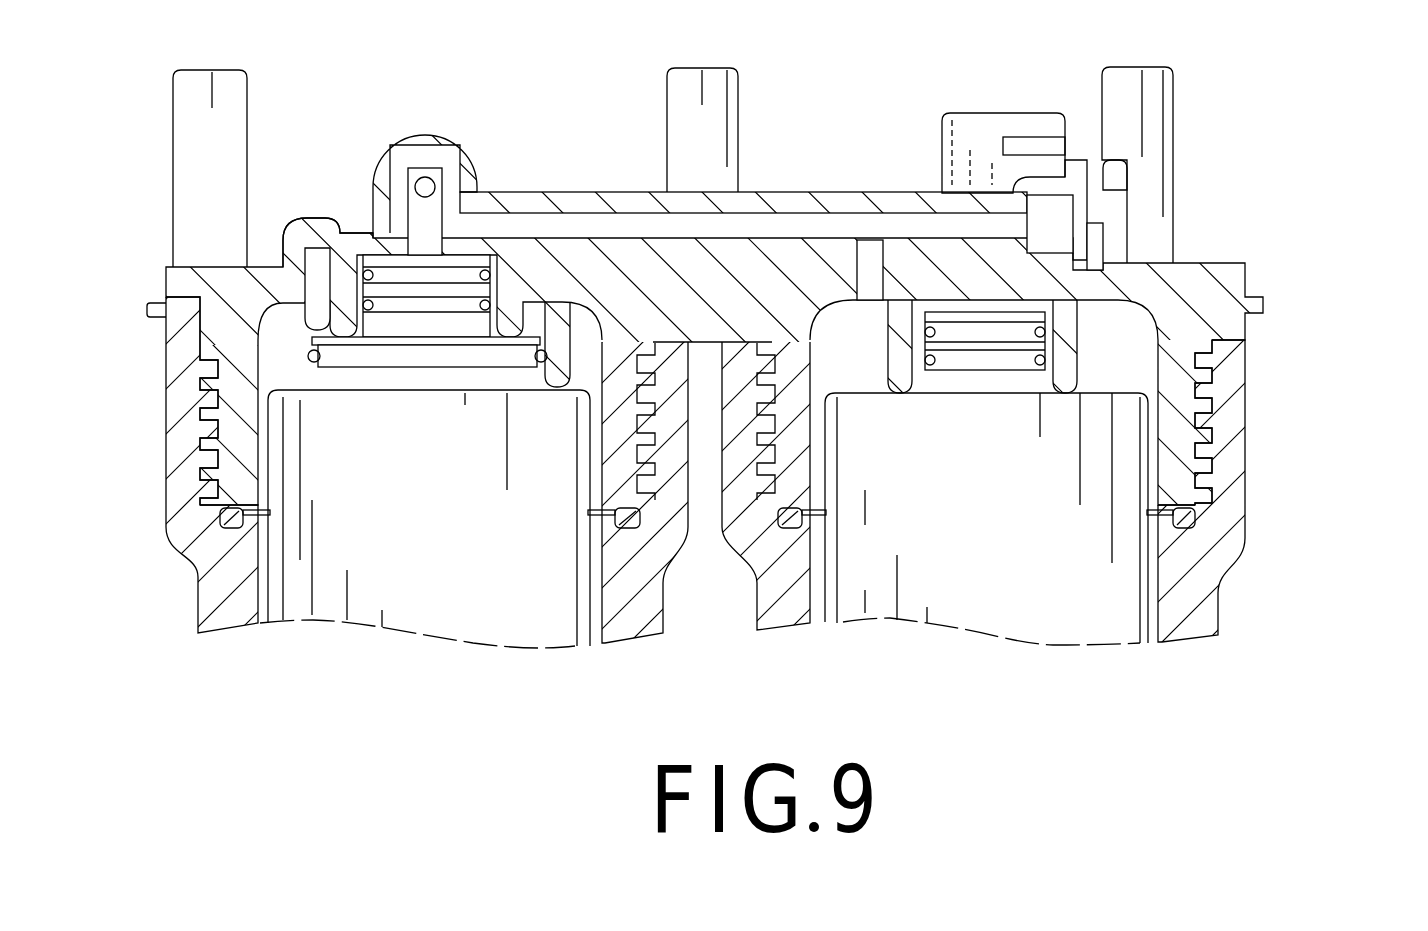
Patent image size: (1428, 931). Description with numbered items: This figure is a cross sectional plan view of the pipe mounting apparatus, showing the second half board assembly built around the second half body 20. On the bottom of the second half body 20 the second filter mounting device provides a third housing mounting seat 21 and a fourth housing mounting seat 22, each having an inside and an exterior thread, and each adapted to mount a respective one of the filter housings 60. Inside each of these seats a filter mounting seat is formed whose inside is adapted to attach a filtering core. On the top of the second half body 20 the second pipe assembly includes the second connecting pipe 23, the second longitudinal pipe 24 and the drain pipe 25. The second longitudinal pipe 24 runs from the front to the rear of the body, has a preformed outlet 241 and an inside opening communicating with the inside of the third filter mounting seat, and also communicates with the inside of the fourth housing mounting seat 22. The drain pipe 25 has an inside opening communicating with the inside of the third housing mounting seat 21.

The second half body 20 is at (1237, 286).
The third housing mounting seat 21 is at (197, 397).
The fourth housing mounting seat 22 is at (1215, 402).
The second connecting pipe 23 is at (440, 133).
The second longitudinal pipe 24 is at (776, 196).
The preformed outlet 241 is at (1117, 210).
The drain pipe 25 is at (325, 228).
The filter housing 60 is at (173, 472).